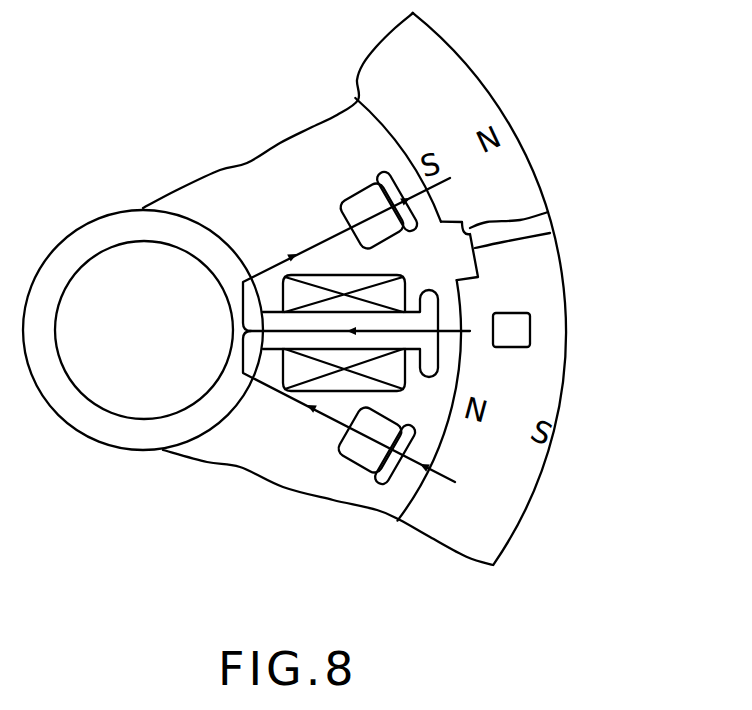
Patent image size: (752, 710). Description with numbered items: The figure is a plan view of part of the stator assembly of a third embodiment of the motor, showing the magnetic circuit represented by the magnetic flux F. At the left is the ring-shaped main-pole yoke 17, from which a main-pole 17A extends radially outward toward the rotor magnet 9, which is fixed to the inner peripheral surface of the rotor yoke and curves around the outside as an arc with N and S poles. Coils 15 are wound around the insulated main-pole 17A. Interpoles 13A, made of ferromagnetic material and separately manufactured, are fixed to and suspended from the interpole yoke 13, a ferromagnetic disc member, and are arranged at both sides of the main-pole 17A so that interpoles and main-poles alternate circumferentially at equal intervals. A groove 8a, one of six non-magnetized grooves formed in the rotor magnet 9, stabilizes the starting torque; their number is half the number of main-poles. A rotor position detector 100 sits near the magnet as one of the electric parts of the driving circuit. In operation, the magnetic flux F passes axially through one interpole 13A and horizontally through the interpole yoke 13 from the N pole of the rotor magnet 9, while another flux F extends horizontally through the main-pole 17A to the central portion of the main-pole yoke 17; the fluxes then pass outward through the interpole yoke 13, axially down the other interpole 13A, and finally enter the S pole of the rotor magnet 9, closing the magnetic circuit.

The rotor magnet 9 is at (408, 62).
The interpole yoke 13 is at (217, 183).
The interpole 13A is at (391, 173).
The groove 8a is at (548, 212).
The main-pole 17A is at (430, 317).
The rotor position detector 100 is at (520, 333).
The coil 15 is at (390, 373).
The main-pole yoke 17 is at (220, 417).
The magnetic flux F is at (322, 240).